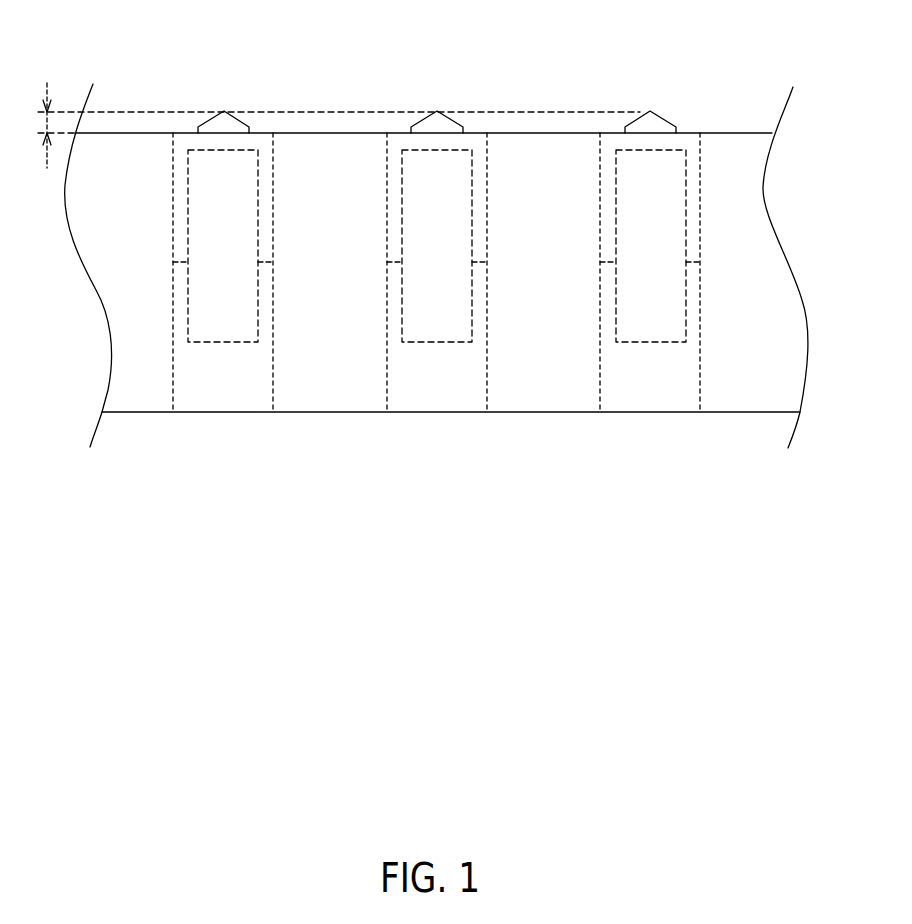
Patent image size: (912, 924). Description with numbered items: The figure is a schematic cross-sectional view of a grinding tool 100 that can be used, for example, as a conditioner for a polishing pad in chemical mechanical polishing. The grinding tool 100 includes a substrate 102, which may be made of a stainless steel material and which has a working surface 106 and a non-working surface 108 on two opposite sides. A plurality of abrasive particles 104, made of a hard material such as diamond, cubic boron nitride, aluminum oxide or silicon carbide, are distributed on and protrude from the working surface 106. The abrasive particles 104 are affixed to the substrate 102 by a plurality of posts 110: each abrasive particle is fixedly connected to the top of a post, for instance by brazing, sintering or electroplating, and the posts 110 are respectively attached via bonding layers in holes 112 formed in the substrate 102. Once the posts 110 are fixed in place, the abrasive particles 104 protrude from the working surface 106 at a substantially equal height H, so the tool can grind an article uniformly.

The grinding tool 100 is at (111, 40).
The substrate 102 is at (780, 390).
The abrasive particles 104 is at (660, 128).
The working surface 106 is at (742, 133).
The non-working surface 108 is at (742, 412).
The posts 110 is at (668, 232).
The holes 112 is at (279, 305).